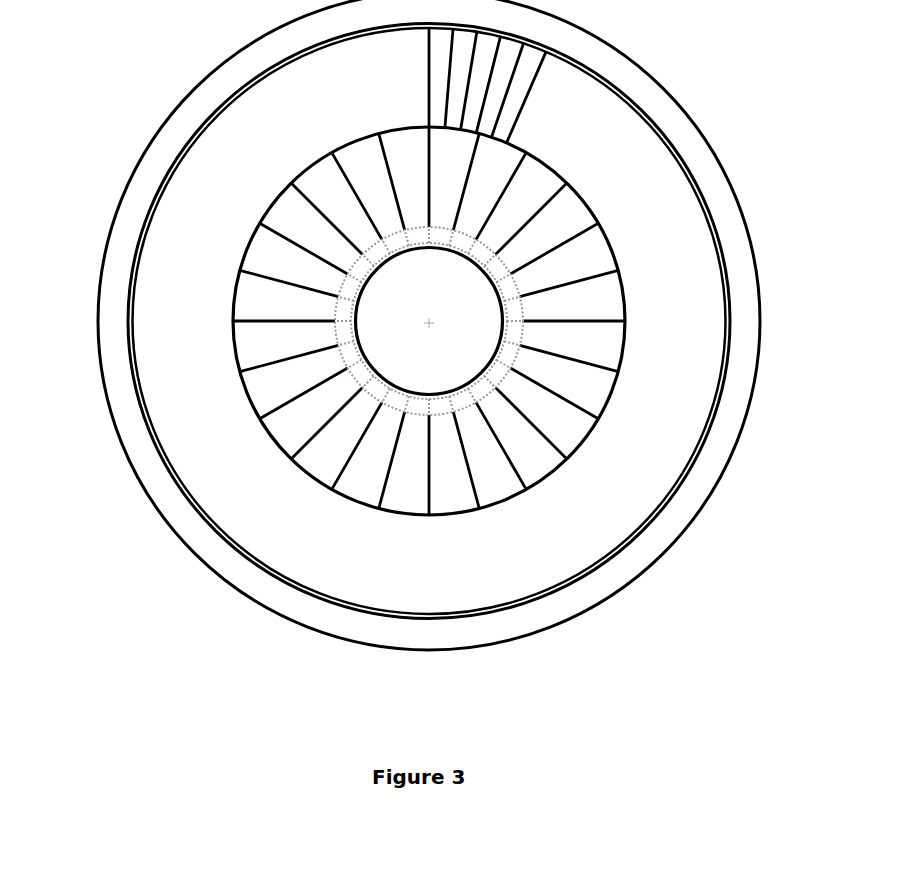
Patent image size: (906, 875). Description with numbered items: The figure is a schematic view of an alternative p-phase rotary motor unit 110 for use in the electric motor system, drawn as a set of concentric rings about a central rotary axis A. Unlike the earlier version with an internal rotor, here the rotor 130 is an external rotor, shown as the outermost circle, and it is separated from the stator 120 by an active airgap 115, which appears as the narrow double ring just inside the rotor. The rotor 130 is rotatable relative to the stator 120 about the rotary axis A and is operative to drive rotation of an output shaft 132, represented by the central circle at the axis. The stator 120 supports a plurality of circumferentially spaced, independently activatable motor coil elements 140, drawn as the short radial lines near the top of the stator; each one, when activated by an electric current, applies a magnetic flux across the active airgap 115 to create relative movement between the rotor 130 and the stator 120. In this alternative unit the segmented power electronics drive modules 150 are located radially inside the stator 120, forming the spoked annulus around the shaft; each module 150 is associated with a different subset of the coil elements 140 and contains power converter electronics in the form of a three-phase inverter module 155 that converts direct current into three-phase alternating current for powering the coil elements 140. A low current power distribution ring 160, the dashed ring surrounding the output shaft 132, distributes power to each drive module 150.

The rotary motor unit 110 is at (186, 598).
The active airgap 115 is at (136, 254).
The stator 120 is at (160, 368).
The rotor 130 is at (160, 130).
The output shaft 132 is at (372, 338).
The activatable motor coil elements 140 is at (505, 53).
The segmented power electronics drive modules 150 is at (405, 518).
The 3-phase inverter module 155 is at (560, 218).
The low current power distribution ring 160 is at (502, 372).